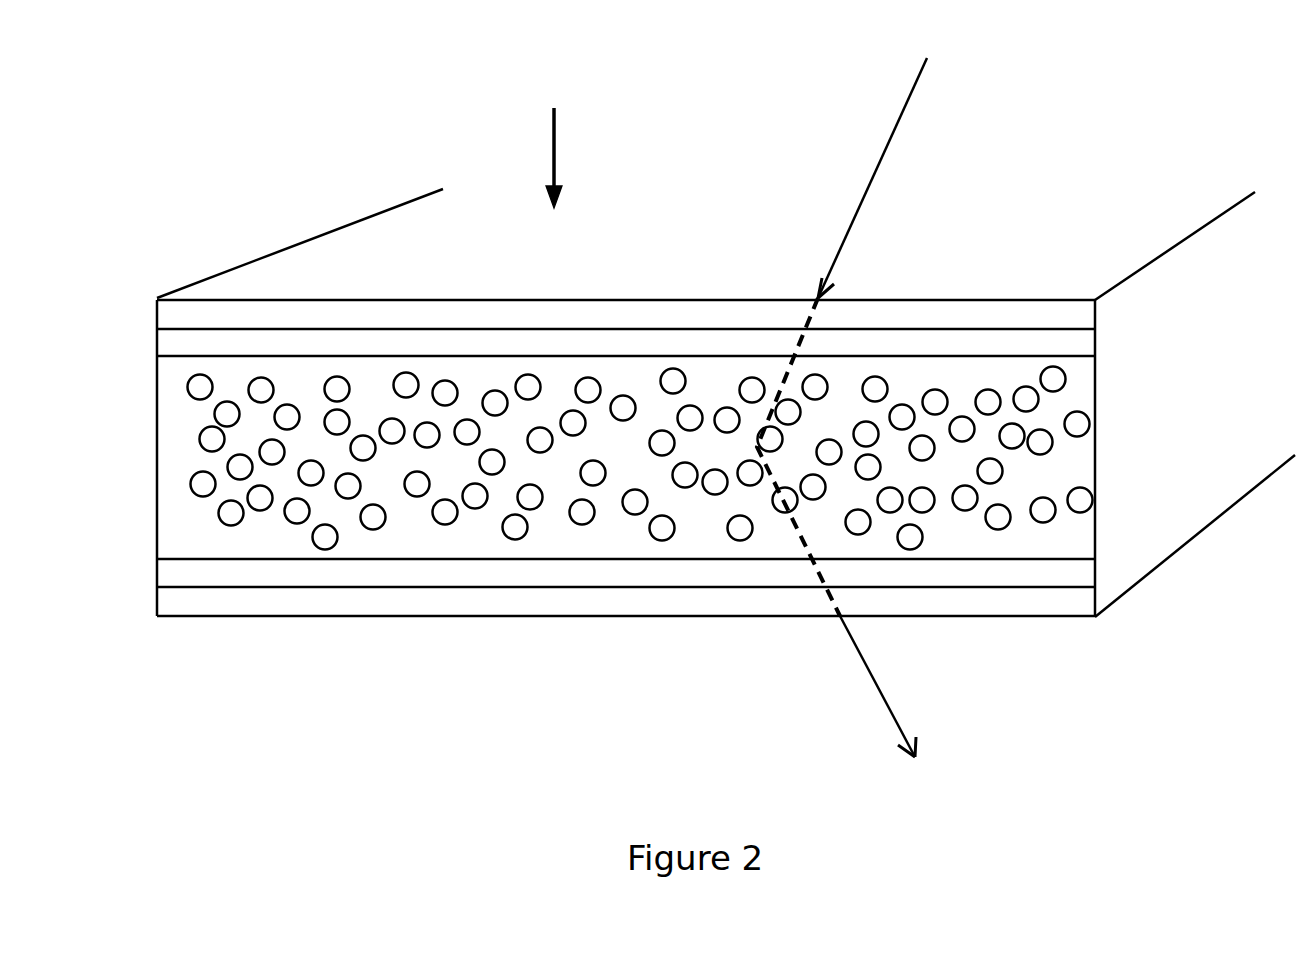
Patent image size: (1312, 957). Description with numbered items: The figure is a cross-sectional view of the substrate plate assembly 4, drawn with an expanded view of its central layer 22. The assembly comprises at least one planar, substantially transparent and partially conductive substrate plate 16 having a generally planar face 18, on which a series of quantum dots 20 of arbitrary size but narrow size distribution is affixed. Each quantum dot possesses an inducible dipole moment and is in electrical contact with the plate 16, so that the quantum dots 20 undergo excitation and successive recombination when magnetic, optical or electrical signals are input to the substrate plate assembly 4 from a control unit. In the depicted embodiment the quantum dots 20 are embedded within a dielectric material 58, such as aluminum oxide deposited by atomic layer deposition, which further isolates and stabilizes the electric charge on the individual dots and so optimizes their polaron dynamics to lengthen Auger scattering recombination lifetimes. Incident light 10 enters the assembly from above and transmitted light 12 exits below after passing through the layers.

The substrate plate assembly 4 is at (555, 134).
The incident light 10 is at (855, 157).
The transmitted light 12 is at (843, 652).
The substrate plate 16 is at (1027, 322).
The planar face 18 is at (383, 263).
The quantum dots 20 is at (263, 498).
The central layer 22 is at (898, 460).
The dielectric material 58 is at (398, 532).